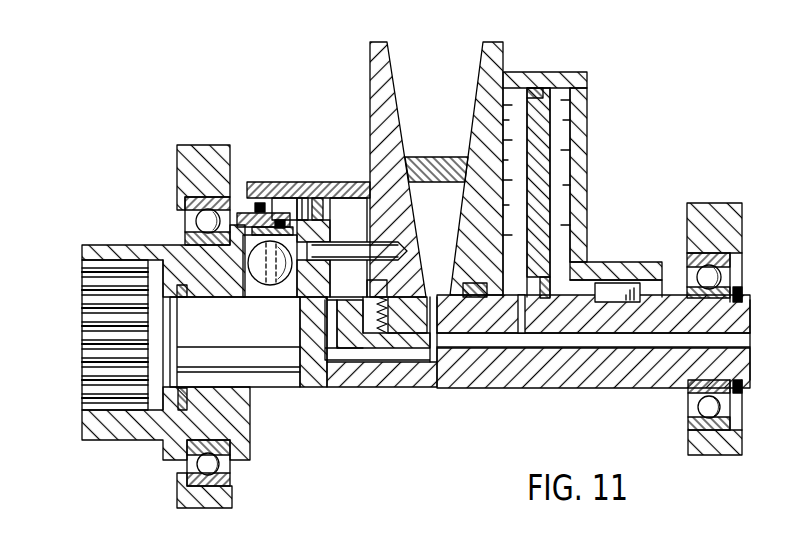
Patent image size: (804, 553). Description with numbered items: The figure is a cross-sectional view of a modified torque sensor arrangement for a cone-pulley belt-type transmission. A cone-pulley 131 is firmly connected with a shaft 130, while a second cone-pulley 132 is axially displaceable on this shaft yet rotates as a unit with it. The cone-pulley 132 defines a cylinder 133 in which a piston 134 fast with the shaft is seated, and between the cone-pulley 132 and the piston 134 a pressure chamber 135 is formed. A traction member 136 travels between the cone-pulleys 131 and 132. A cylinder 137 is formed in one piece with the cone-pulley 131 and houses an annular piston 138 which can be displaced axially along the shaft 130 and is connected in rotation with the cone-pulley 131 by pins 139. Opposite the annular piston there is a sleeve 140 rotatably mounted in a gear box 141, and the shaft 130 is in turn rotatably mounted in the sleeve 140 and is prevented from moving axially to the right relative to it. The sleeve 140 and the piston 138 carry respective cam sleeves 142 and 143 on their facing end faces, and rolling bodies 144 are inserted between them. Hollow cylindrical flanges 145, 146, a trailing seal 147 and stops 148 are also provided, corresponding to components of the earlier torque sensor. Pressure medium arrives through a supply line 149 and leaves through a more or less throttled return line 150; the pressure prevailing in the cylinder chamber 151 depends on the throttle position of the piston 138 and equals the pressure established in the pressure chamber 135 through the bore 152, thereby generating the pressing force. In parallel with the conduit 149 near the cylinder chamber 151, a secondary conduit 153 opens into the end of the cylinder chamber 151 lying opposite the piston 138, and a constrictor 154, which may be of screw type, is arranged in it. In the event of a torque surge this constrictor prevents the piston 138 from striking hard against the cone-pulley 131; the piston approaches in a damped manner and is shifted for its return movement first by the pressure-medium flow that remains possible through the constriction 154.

The shaft 130 is at (678, 368).
The cone-pulley 131 is at (380, 77).
The cone-pulley 132 is at (493, 55).
The cylinder 133 is at (577, 82).
The piston 134 is at (538, 127).
The pressure chamber 135 is at (517, 177).
The traction member 136 is at (435, 158).
The cylinder 137 is at (280, 190).
The annular piston 138 is at (343, 300).
The pins 139 is at (353, 243).
The sleeve 140 is at (243, 443).
The gear box 141 is at (215, 500).
The cam sleeve 142 is at (245, 285).
The cam sleeve 143 is at (302, 343).
The rolling bodies 144 is at (260, 287).
The hollow cylindrical flange 145 is at (240, 217).
The hollow cylindrical flange 146 is at (252, 202).
The trailing seal 147 is at (318, 200).
The stops 148 is at (302, 218).
The pressure-medium supply line 149 is at (630, 342).
The pressure-medium return line 150 is at (387, 363).
The cylinder chamber 151 is at (410, 260).
The bore 152 is at (514, 333).
The secondary conduit 153 is at (382, 293).
The constrictor 154 is at (387, 290).